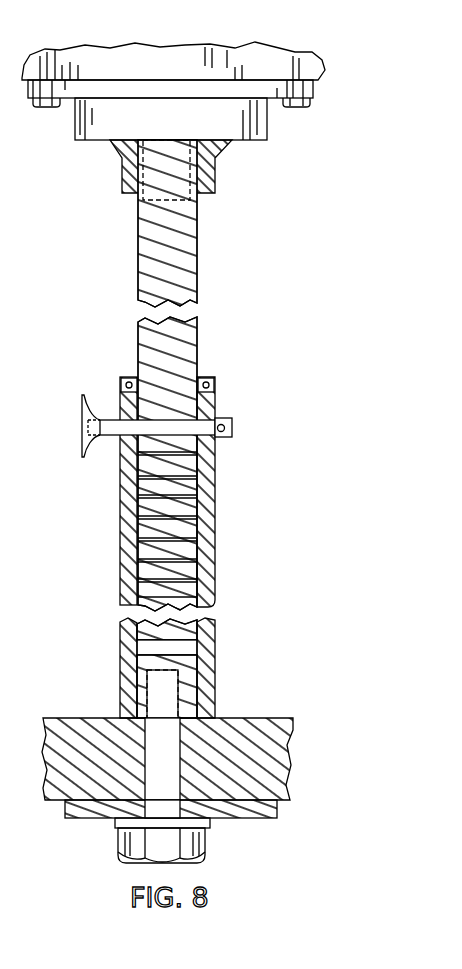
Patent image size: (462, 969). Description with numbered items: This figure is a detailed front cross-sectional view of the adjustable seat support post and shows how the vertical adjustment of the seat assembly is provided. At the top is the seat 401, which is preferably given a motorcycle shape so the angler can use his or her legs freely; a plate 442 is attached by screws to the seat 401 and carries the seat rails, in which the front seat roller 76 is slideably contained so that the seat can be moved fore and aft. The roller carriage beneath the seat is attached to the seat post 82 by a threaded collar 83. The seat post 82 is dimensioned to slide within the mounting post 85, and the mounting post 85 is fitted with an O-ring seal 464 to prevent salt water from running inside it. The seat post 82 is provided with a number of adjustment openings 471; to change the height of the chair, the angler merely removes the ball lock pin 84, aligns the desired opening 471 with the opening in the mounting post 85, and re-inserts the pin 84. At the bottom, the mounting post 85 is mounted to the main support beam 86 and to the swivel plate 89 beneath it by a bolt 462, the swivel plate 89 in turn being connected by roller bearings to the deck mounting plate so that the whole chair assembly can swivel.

The seat 401 is at (300, 63).
The plate 442 is at (316, 90).
The front seat roller 76 is at (250, 107).
The threaded collar 83 is at (217, 172).
The seat post 82 is at (168, 238).
The O-ring seal 464 is at (205, 382).
The ball lock pin 84 is at (223, 420).
The adjustment openings 471 is at (170, 455).
The mounting post 85 is at (205, 532).
The main support beam 86 is at (242, 743).
The swivel plate 89 is at (267, 812).
The bolt 462 is at (205, 842).